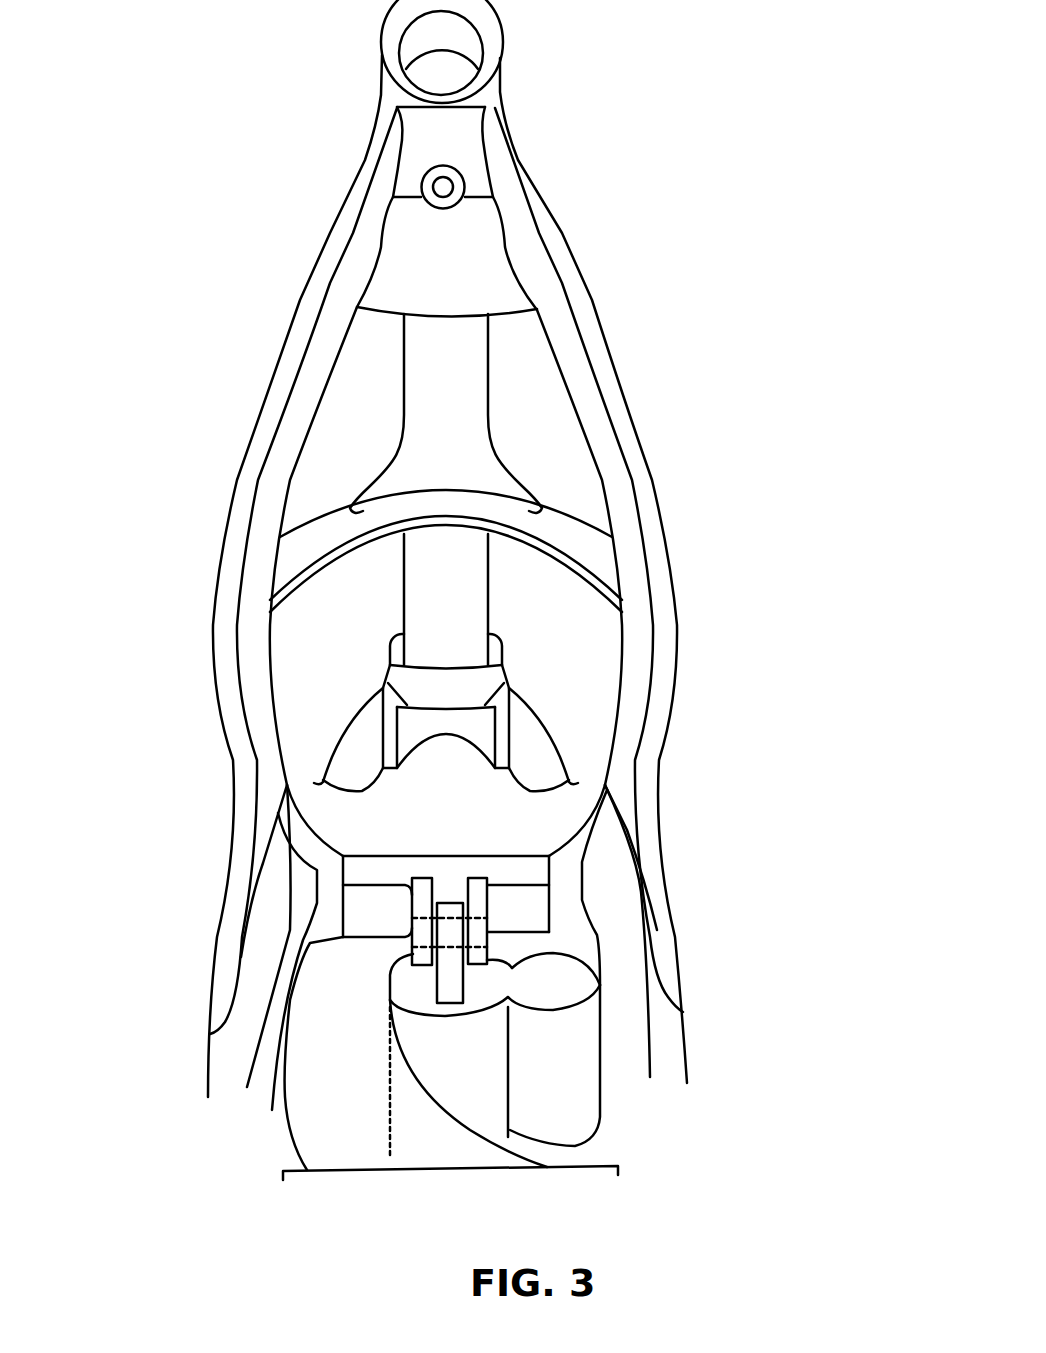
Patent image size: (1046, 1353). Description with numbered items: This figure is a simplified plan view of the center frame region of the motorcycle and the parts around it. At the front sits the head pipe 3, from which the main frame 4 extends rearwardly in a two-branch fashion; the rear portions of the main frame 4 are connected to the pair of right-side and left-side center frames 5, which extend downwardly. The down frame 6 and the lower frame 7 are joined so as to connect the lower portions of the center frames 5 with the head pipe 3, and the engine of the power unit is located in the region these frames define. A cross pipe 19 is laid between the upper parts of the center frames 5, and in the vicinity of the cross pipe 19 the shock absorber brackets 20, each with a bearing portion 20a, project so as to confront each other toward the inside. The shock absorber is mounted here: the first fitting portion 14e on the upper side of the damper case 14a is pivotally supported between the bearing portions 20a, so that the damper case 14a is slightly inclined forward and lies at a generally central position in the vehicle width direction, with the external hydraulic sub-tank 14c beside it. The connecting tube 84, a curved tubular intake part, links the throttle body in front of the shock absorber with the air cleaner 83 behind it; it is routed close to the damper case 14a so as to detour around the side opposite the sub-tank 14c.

The head pipe 3 is at (504, 34).
The main frame 4 is at (273, 373).
The center frames 5 is at (273, 910).
The down frame 6 is at (437, 435).
The lower frame 7 is at (537, 740).
The damper case 14a is at (480, 1070).
The sub-tank 14c is at (587, 1042).
The first fitting portion 14e is at (448, 903).
The cross pipe 19 is at (398, 868).
The shock absorber bracket 20 is at (382, 912).
The bearing portion 20a is at (398, 958).
The air cleaner 83 is at (582, 1167).
The connecting tube 84 is at (337, 1125).